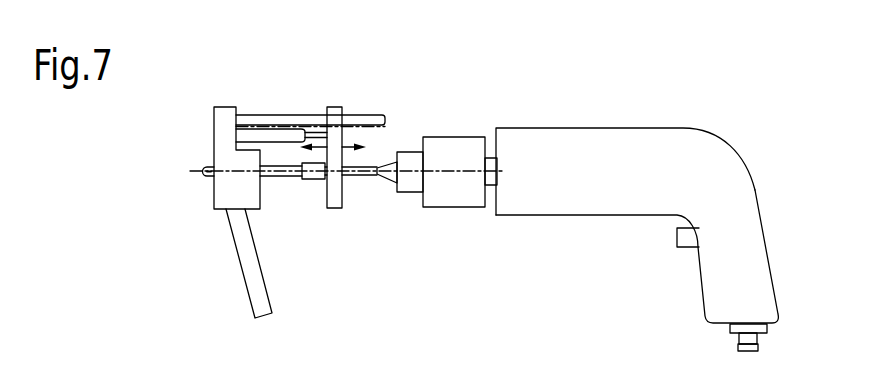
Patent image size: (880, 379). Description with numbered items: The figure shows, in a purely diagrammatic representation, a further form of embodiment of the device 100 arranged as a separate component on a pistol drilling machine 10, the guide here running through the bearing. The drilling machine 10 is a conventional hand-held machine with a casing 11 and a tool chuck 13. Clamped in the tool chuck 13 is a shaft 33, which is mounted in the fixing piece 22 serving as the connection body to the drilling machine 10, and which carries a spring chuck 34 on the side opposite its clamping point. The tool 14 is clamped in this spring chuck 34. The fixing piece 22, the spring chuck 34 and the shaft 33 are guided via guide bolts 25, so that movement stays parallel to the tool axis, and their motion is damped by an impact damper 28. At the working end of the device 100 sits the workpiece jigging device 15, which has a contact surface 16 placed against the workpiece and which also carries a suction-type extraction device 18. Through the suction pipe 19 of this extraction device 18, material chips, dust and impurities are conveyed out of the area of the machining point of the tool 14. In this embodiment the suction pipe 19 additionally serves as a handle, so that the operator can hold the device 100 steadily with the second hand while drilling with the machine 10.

The drilling machine 10 is at (676, 100).
The casing 11 is at (572, 138).
The tool chuck 13 is at (446, 222).
The tool 14 is at (283, 177).
The workpiece jigging device 15 is at (230, 163).
The contact surface 16 is at (215, 187).
The suction-type extraction device 18 is at (216, 250).
The suction pipe 19 is at (253, 290).
The fixing piece 22 is at (335, 120).
The guide bolts 25 is at (298, 118).
The impact damper 28 is at (270, 140).
The shaft 33 is at (366, 174).
The spring chuck 34 is at (315, 180).
The device 100 is at (266, 80).